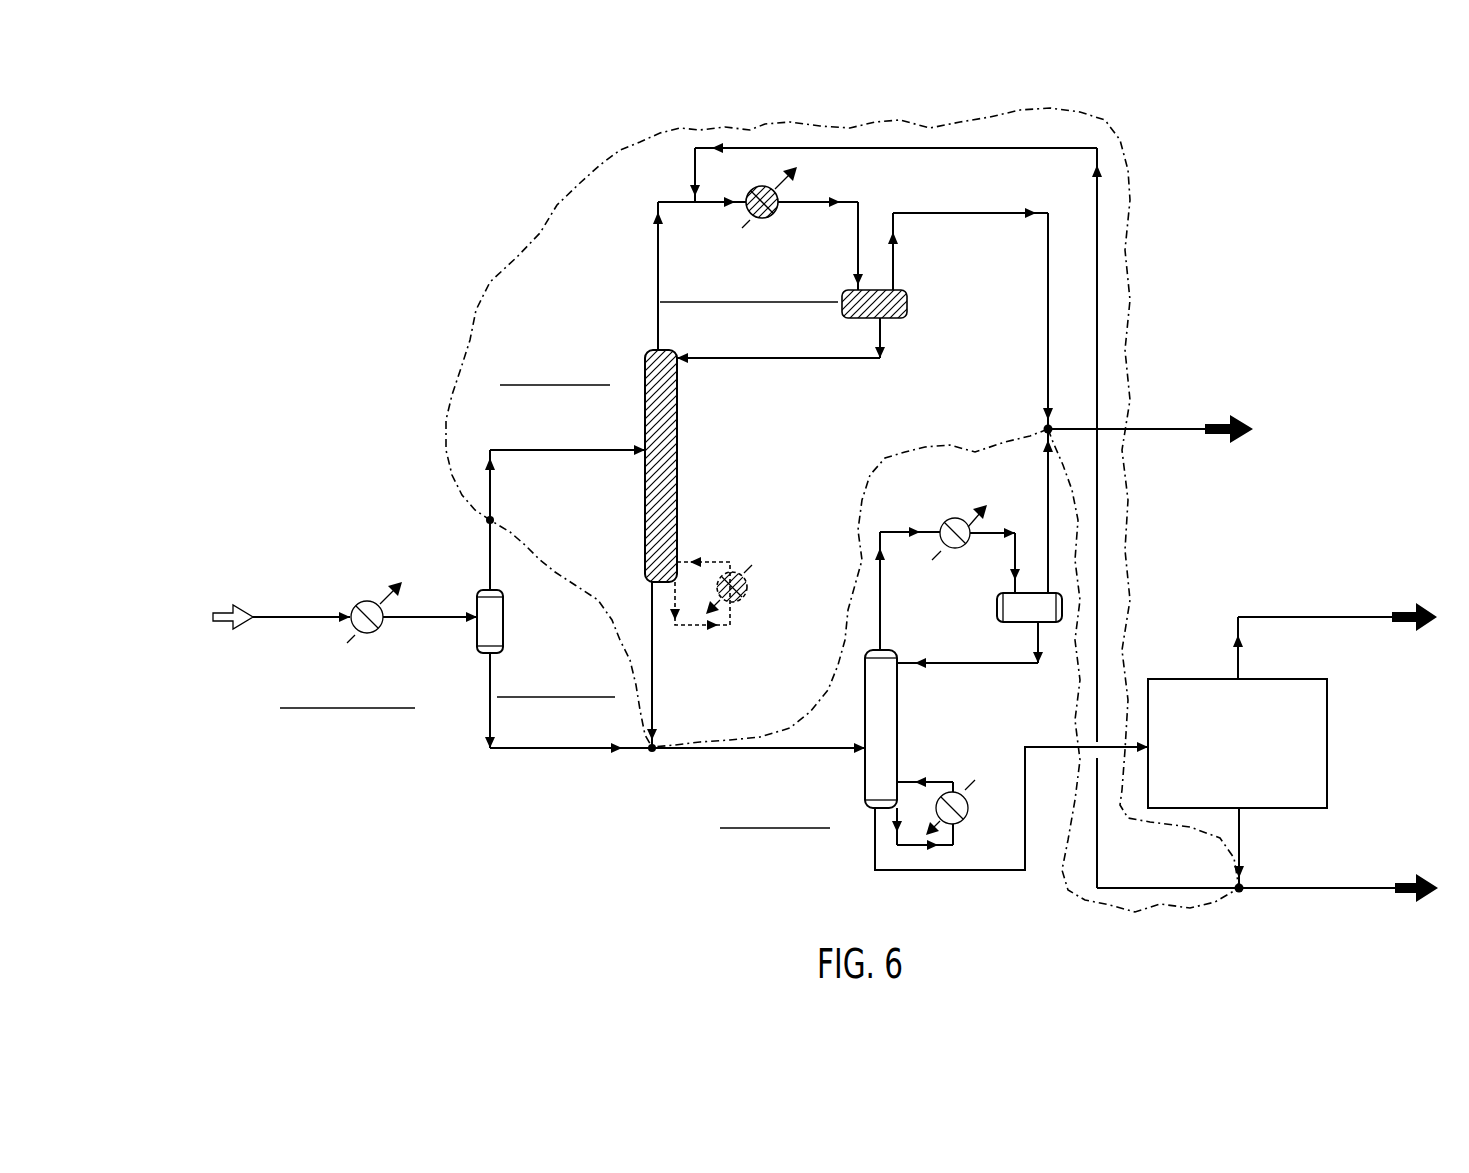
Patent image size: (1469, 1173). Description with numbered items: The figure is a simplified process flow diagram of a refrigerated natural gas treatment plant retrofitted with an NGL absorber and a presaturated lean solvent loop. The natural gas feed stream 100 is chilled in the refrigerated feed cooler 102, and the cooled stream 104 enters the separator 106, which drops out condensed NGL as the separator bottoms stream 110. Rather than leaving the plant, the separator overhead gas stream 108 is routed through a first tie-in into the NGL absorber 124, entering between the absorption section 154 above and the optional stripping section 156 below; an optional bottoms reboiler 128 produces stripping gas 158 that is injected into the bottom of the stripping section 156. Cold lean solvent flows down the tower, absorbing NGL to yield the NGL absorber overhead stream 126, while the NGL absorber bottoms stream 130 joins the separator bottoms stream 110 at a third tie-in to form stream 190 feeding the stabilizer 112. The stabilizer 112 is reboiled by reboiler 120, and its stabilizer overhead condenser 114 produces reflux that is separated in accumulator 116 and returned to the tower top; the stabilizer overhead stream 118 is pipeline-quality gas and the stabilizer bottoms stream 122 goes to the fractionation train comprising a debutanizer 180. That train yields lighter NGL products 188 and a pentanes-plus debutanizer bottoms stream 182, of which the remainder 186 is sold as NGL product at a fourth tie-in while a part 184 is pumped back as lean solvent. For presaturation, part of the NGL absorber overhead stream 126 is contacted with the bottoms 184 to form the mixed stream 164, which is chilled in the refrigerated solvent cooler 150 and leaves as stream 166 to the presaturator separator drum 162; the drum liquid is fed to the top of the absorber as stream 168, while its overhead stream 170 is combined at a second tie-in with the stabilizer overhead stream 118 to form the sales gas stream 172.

The natural gas feed stream 100 is at (312, 614).
The refrigerated feed cooler 102 is at (357, 605).
The cooled stream 104 is at (422, 610).
The separator 106 is at (503, 618).
The separator overhead gas stream 108 is at (490, 532).
The separator bottoms stream 110 is at (562, 746).
The stabilizer 112 is at (897, 713).
The stabilizer overhead condenser 114 is at (945, 522).
The accumulator 116 is at (995, 610).
The stabilizer overhead stream 118 is at (1048, 498).
The reboiler 120 is at (964, 818).
The stabilizer bottoms stream 122 is at (942, 872).
The NGL absorber 124 is at (677, 450).
The NGL absorber overhead stream 126 is at (657, 256).
The bottoms reboiler 128 is at (748, 588).
The NGL absorber bottoms stream 130 is at (653, 660).
The refrigerated solvent cooler 150 is at (775, 215).
The absorption section 154 is at (660, 385).
The stripping section 156 is at (660, 478).
The stripping gas 158 is at (710, 560).
The presaturator separator drum 162 is at (908, 300).
The mixed stream 164 is at (715, 197).
The chilled mixed stream 166 is at (818, 198).
The presaturated lean solvent stream 168 is at (713, 357).
The presaturator separator drum overhead stream 170 is at (918, 212).
The sales gas stream 172 is at (1142, 428).
The fractionation train comprising a debutanizer 180 is at (1328, 717).
The debutanizer bottoms stream 182 is at (1242, 813).
The lean solvent portion of debutanizer bottoms 184 is at (1037, 152).
The NGL product stream 186 is at (1357, 888).
The lighter NGL products 188 is at (1297, 617).
The combined stabilizer feed stream 190 is at (807, 745).